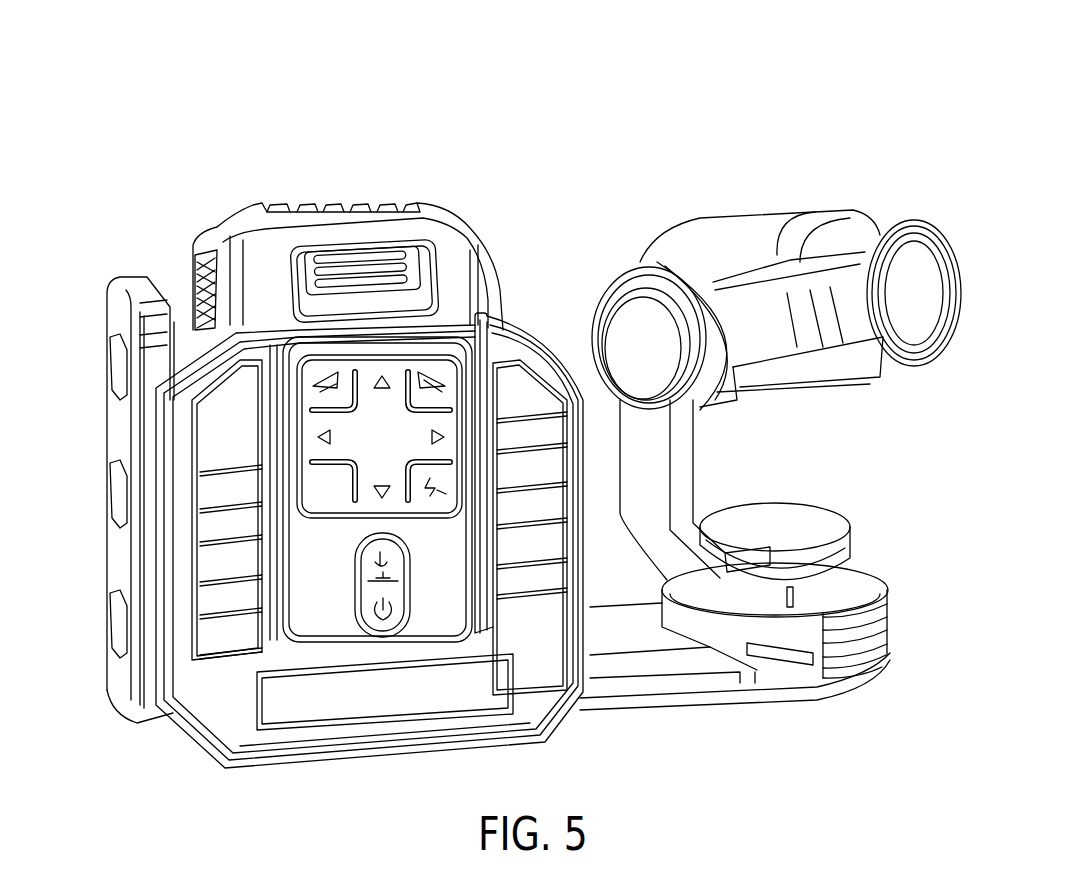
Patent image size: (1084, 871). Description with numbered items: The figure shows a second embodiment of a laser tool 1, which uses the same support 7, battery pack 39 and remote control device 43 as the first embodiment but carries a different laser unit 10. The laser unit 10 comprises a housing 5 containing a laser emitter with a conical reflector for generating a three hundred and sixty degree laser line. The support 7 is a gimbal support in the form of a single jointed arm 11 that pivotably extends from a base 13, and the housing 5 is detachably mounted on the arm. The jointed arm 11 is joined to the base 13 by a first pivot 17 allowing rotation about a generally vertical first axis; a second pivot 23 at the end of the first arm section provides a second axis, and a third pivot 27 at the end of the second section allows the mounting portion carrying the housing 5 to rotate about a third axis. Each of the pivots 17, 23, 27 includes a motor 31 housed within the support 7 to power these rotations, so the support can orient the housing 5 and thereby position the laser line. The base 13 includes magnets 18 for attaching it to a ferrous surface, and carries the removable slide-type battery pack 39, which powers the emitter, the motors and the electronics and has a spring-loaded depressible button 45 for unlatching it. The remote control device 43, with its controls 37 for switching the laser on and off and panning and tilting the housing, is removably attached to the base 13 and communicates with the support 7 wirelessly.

The laser tool 1 is at (638, 88).
The housing 5 is at (742, 232).
The support 7 is at (240, 700).
The laser unit 10 is at (696, 219).
The jointed arm 11 is at (688, 467).
The base 13 is at (630, 670).
The first pivot 17 is at (815, 520).
The magnets 18 is at (113, 627).
The second pivot 23 is at (634, 317).
The third pivot 27 is at (910, 250).
The motor 31 is at (860, 637).
The controls 37 is at (372, 596).
The battery pack 39 is at (243, 220).
The remote control device 43 is at (437, 610).
The depressible button 45 is at (317, 258).